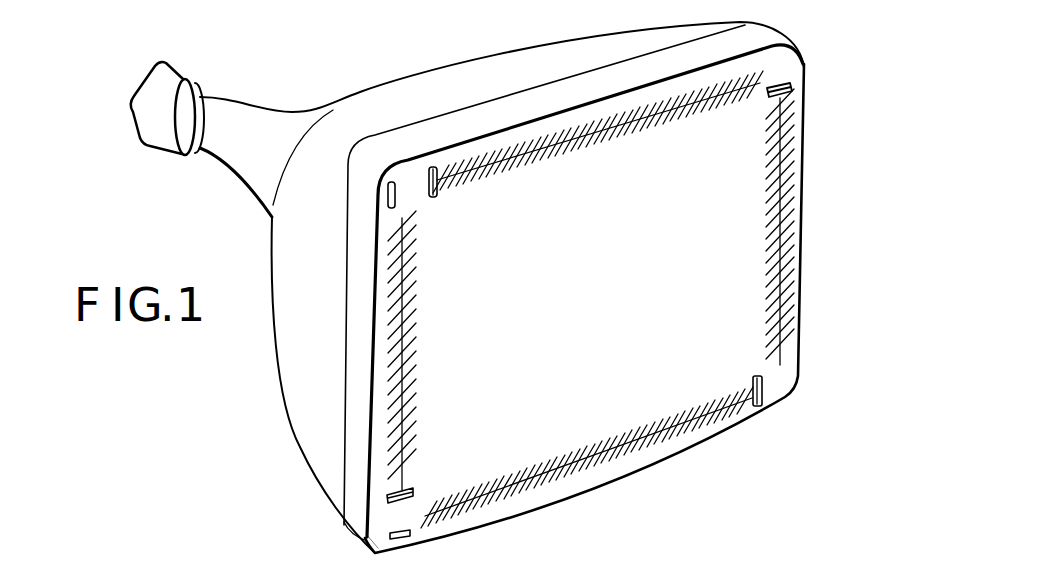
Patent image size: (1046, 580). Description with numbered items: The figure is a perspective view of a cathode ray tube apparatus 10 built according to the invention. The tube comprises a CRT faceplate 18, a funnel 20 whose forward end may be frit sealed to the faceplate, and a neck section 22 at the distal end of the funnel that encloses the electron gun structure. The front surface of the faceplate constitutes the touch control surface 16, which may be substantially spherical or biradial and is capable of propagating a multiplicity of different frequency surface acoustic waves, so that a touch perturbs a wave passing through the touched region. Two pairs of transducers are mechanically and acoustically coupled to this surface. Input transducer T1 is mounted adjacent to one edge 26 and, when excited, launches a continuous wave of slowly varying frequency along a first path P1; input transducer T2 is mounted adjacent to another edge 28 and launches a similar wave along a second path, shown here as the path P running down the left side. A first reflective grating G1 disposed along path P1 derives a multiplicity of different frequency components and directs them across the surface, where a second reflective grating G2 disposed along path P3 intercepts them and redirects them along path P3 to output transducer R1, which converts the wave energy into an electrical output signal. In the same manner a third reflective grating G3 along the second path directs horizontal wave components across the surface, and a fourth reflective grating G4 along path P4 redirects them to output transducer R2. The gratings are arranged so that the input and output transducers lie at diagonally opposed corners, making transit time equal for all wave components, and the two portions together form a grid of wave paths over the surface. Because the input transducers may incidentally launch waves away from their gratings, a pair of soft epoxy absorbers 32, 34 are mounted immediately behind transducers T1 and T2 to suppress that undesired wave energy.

The cathode ray tube apparatus 10 is at (272, 386).
The touch control surface 16 is at (710, 353).
The CRT faceplate 18 is at (360, 442).
The funnel 20 is at (272, 242).
The neck section 22 is at (267, 110).
The edge 26 is at (480, 138).
The edge 28 is at (363, 490).
The absorber 32 is at (388, 198).
The absorber 34 is at (407, 537).
The input transducer T1 is at (437, 181).
The input transducer T2 is at (372, 537).
The output transducer R1 is at (767, 387).
The output transducer R2 is at (807, 62).
The conductive coating strip P is at (412, 272).
The first path P1 is at (647, 118).
The path P3 is at (663, 432).
The path P4 is at (790, 196).
The first reflective grating G1 is at (578, 140).
The second reflective grating G2 is at (583, 452).
The third reflective grating G3 is at (420, 342).
The fourth reflective grating G4 is at (770, 243).